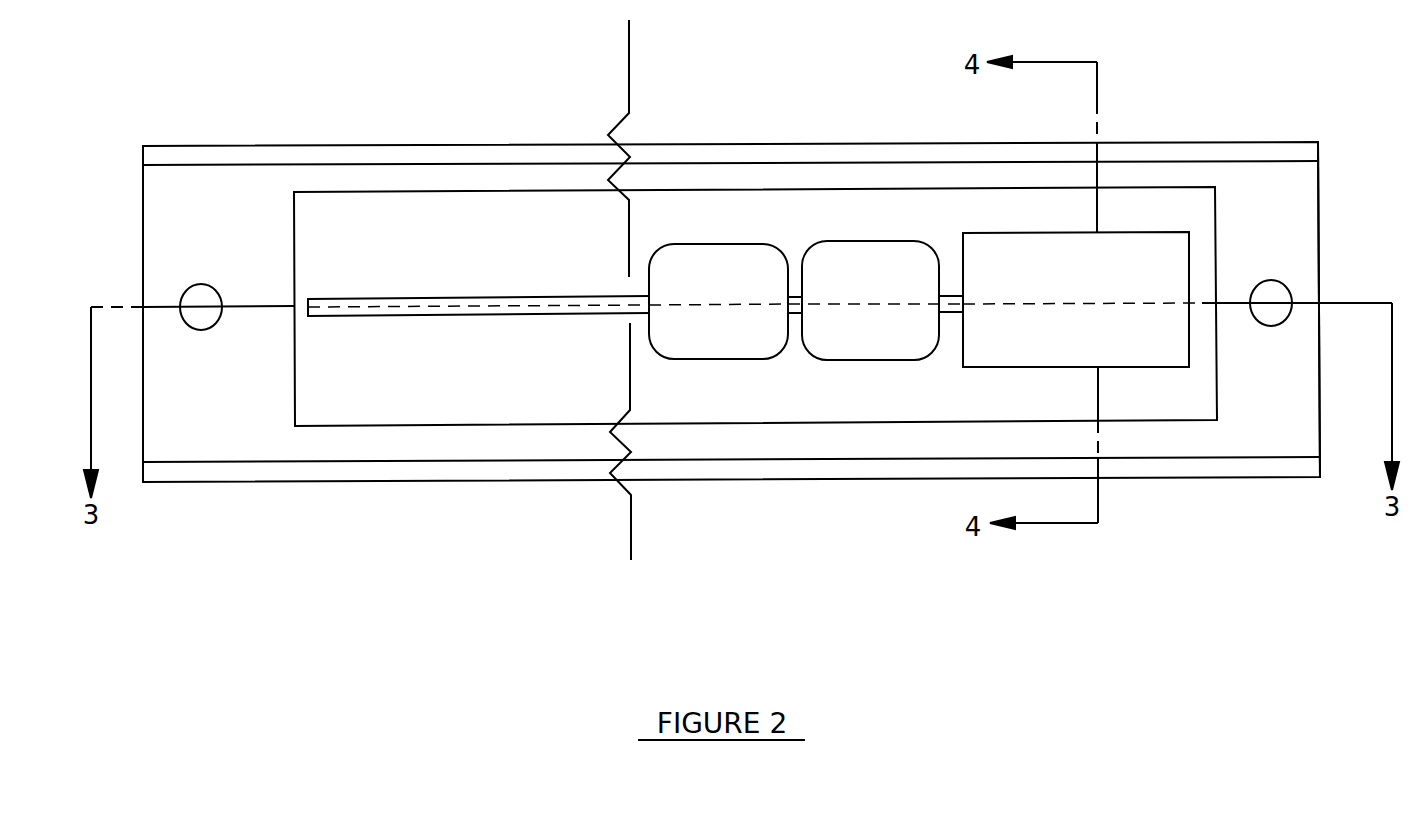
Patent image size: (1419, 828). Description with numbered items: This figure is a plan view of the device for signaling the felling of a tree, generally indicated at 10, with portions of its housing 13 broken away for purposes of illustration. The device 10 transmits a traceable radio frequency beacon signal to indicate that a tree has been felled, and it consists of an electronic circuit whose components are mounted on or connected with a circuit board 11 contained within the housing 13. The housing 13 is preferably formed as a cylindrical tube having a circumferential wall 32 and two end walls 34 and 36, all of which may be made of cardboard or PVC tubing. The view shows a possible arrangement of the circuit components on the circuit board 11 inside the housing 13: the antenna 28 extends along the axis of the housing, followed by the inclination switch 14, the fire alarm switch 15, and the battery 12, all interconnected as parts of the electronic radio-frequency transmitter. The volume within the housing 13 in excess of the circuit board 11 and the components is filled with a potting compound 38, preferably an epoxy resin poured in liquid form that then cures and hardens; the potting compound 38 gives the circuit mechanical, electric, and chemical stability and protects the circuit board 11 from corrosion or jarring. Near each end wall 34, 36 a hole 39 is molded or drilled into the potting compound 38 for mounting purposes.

The device for signaling the felling of a tree 10 is at (1202, 477).
The circuit board 11 is at (512, 379).
The battery 12 is at (1039, 281).
The housing 13 is at (243, 146).
The inclination switch 14 is at (704, 282).
The fire alarm switch 15 is at (858, 281).
The antenna 28 is at (567, 297).
The circumferential wall 32 is at (456, 481).
The end wall 34 is at (143, 207).
The end wall 36 is at (1320, 210).
The potting compound 38 is at (252, 195).
The holes 39 is at (186, 293).